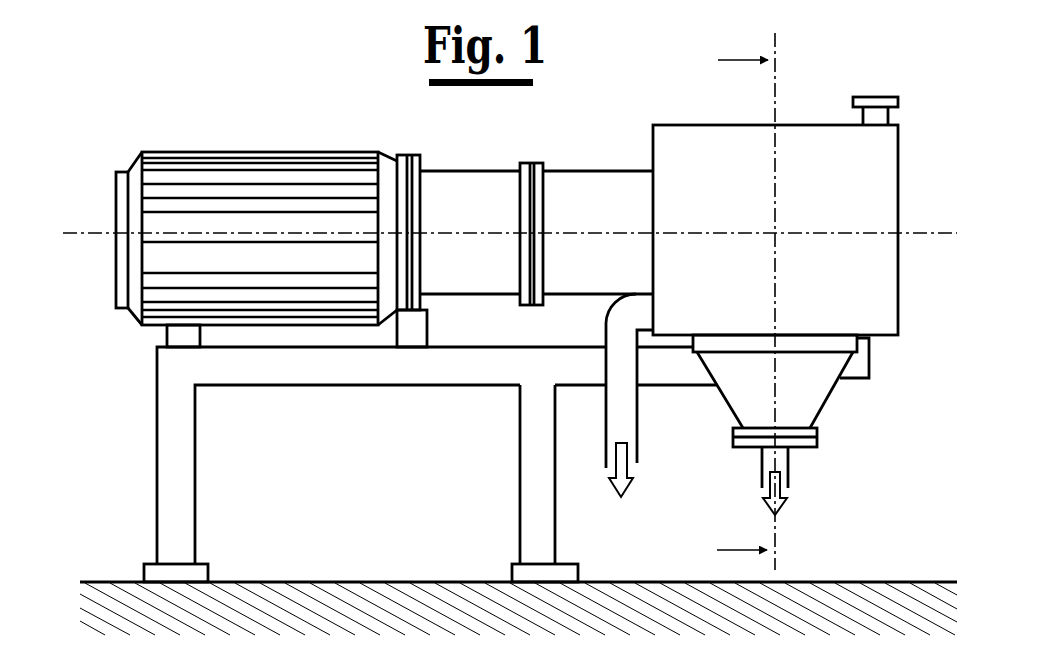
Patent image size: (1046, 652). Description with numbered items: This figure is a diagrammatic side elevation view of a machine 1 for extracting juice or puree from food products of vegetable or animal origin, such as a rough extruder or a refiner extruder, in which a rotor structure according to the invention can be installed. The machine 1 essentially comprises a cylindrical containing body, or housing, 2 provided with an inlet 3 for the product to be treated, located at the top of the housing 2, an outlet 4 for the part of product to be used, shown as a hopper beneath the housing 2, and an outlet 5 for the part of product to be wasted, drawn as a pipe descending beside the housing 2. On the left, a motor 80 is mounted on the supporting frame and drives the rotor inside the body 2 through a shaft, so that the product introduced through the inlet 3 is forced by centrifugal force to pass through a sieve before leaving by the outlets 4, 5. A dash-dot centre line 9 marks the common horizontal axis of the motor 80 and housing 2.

The machine 1 is at (340, 93).
The cylindrical containing body 2 is at (689, 107).
The inlet 3 is at (885, 97).
The outlet 4 is at (815, 392).
The outlet 5 is at (627, 410).
The longitudinal axis 9 is at (75, 232).
The motor 80 is at (130, 327).